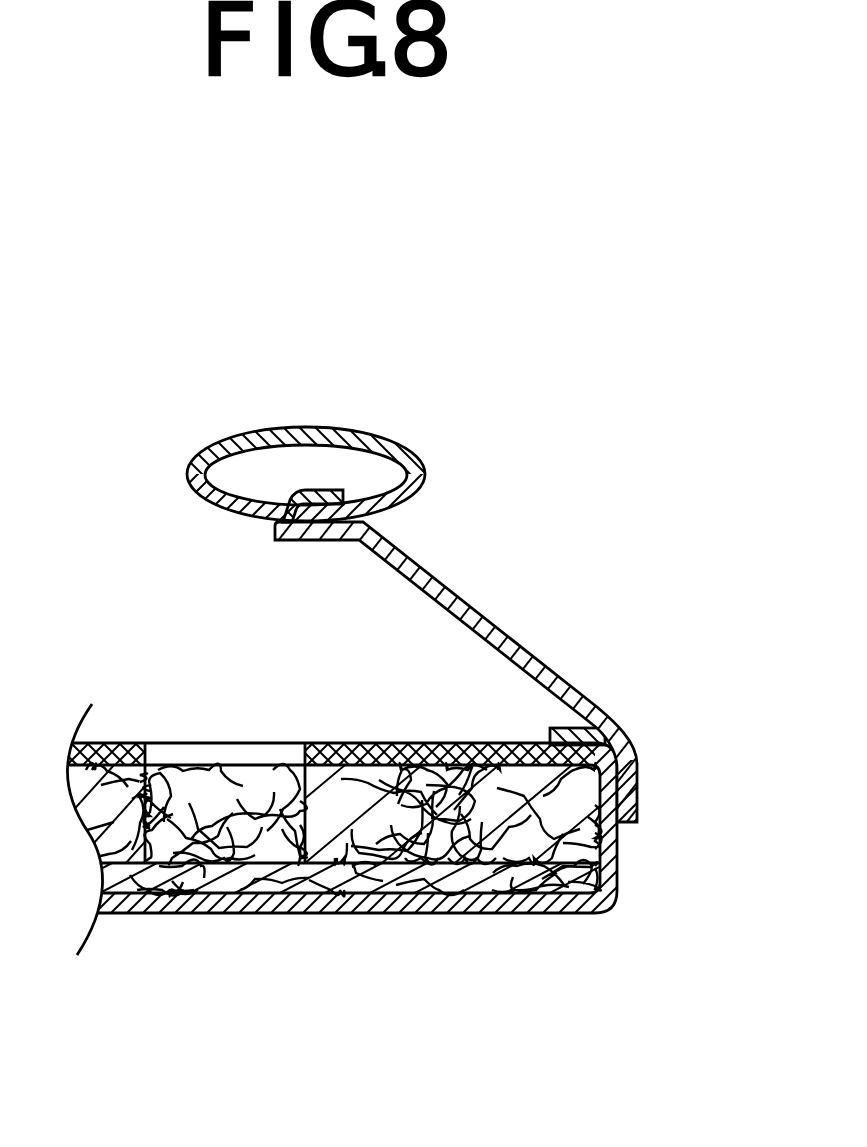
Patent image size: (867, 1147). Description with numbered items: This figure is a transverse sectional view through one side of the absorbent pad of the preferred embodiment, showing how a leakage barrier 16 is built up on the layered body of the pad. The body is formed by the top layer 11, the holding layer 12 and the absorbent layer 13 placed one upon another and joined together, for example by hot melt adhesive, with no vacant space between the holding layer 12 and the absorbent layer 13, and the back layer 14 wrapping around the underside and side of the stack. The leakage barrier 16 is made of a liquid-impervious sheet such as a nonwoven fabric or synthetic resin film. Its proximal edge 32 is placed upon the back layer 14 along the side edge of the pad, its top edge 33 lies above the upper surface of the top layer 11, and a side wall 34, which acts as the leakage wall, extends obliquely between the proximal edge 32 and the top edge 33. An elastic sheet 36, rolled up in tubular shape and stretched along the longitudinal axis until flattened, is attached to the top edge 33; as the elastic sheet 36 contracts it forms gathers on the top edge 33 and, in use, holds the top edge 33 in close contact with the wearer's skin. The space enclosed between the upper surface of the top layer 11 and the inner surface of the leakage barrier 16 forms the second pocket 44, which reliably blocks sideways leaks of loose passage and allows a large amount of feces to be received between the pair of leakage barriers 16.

The top layer 11 is at (337, 750).
The holding layer 12 is at (357, 840).
The absorbent layer 13 is at (401, 870).
The back layer 14 is at (477, 907).
The leakage barrier 16 is at (553, 668).
The proximal edge 32 is at (640, 782).
The top edge 33 is at (397, 548).
The side wall 34 is at (492, 628).
The elastic sheet 36 is at (347, 427).
The second pocket 44 is at (360, 605).